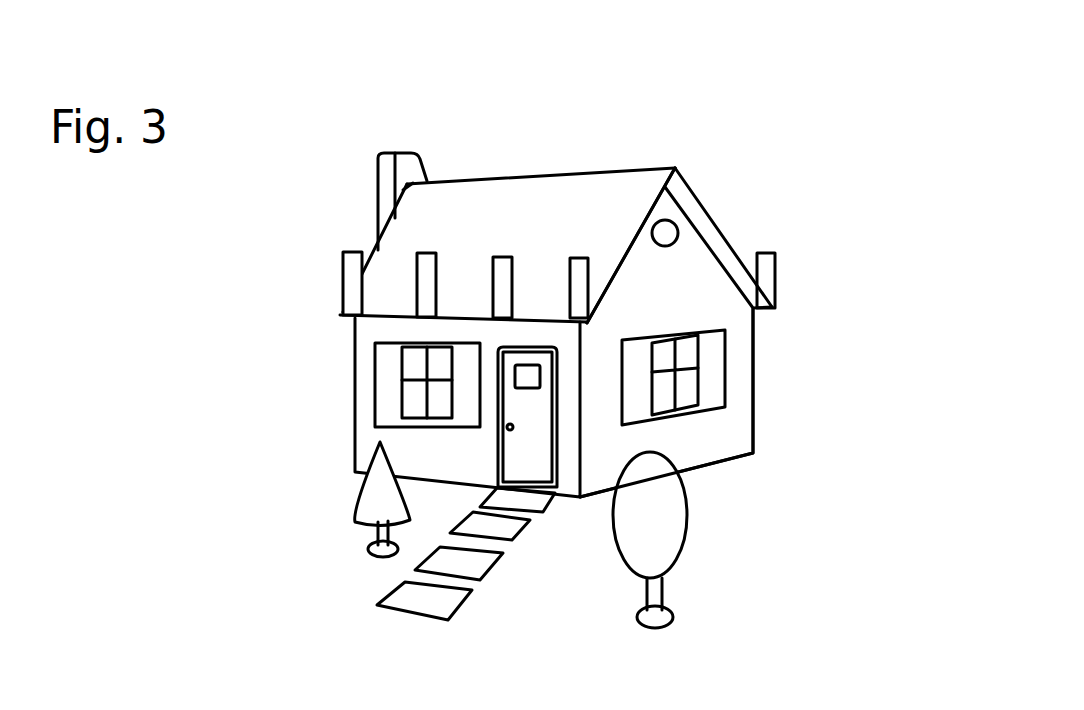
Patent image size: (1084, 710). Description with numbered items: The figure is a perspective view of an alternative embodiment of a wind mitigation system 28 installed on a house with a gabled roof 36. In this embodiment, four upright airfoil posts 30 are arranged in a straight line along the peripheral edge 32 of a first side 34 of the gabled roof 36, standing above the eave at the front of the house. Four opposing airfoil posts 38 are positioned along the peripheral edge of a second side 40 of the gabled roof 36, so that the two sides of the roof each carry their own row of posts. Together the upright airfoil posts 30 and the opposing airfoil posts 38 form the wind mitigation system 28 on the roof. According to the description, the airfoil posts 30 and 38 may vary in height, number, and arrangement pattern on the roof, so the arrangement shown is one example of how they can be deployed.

The wind mitigation system 28 is at (866, 167).
The upright airfoil posts 30 is at (362, 275).
The peripheral edge 32 is at (392, 318).
The first side 34 is at (666, 332).
The gabled roof 36 is at (586, 172).
The opposing airfoil posts 38 is at (777, 273).
The second side 40 is at (716, 223).